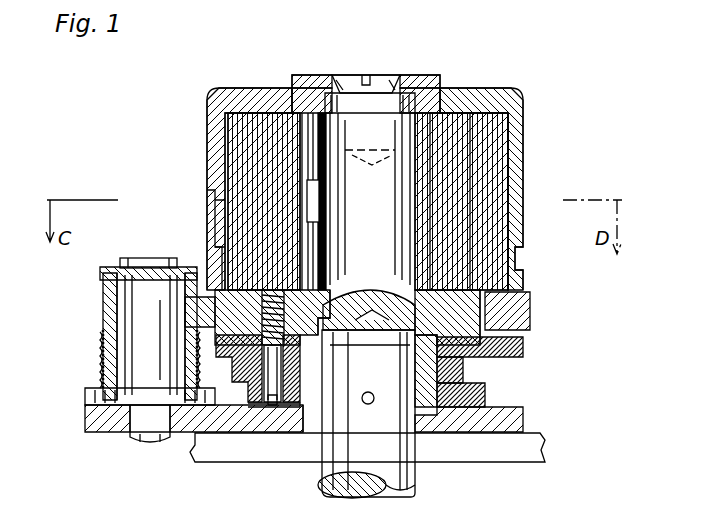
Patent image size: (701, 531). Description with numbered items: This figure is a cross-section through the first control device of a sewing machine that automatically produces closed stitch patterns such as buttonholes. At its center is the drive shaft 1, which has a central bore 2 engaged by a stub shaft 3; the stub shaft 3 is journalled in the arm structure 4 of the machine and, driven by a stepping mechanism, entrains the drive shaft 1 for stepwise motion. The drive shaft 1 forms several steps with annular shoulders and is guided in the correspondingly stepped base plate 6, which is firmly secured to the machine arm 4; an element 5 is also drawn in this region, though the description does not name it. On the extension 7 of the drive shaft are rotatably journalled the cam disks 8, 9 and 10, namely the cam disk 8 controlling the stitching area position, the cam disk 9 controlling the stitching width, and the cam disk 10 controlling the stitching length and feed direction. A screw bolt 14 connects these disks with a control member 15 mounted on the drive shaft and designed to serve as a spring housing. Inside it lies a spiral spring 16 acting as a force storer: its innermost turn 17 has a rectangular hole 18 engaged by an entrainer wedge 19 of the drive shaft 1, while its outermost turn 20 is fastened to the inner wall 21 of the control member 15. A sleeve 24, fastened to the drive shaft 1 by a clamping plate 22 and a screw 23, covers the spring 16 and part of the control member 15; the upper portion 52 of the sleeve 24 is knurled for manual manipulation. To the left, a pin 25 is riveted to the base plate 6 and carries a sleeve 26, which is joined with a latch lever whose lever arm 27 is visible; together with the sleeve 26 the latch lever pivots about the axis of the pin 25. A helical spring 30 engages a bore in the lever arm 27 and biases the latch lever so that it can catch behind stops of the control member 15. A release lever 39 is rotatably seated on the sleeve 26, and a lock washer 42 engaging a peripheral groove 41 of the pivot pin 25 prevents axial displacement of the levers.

The drive shaft 1 is at (378, 200).
The central bore 2 is at (415, 385).
The stub shaft 3 is at (432, 475).
The arm structure 4 is at (500, 463).
The adjusting screw 5 is at (282, 405).
The base plate 6 is at (525, 418).
The extension 7 is at (308, 365).
The cam disk 8 is at (525, 345).
The cam disk 9 is at (465, 371).
The cam disk 10 is at (487, 396).
The screw bolt 14 is at (260, 404).
The control member 15 is at (222, 188).
The spiral spring 16 is at (450, 224).
The innermost turn 17 is at (298, 140).
The rectangular hole 18 is at (305, 150).
The entrainer wedge 19 is at (307, 205).
The outermost turn 20 is at (492, 243).
The inner wall 21 is at (495, 172).
The clamping plate 22 is at (427, 75).
The screw 23 is at (357, 75).
The sleeve 24 is at (223, 180).
The pin 25 is at (148, 435).
The sleeve 26 is at (108, 323).
The lever arm 27 is at (205, 297).
The helical spring 30 is at (105, 365).
The release lever 39 is at (105, 292).
The peripheral groove 41 is at (148, 258).
The lock washer 42 is at (100, 270).
The upper portion 52 is at (523, 110).